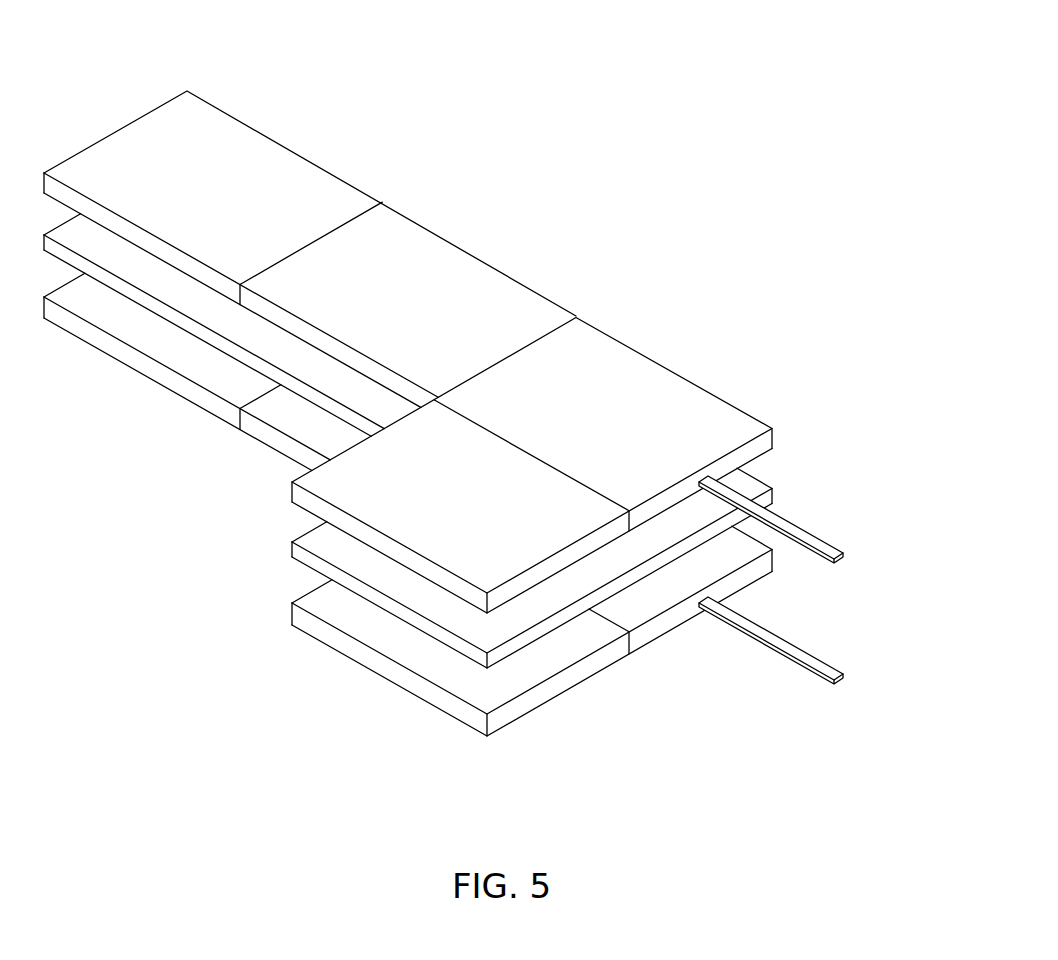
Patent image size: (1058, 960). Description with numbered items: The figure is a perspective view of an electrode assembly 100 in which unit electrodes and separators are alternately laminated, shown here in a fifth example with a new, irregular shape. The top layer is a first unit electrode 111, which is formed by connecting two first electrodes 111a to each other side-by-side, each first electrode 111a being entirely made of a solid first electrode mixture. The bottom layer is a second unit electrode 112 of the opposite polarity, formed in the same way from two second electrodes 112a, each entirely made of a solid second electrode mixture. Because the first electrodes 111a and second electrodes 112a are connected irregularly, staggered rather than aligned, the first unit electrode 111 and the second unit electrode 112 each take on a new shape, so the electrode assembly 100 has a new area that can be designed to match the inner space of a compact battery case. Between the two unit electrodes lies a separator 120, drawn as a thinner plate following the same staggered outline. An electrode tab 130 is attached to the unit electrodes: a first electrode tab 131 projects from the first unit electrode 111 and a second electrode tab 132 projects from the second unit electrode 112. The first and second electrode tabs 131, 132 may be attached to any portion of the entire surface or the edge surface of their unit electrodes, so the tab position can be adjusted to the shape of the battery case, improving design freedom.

The electrode assembly 100 is at (583, 75).
The first unit electrode 111 is at (715, 195).
The first electrode 111a is at (536, 310).
The second unit electrode 112 is at (305, 738).
The second electrode 112a is at (282, 418).
The separator 120 is at (757, 490).
The electrode tab 130 is at (908, 588).
The first electrode tab 131 is at (836, 556).
The second electrode tab 132 is at (832, 677).